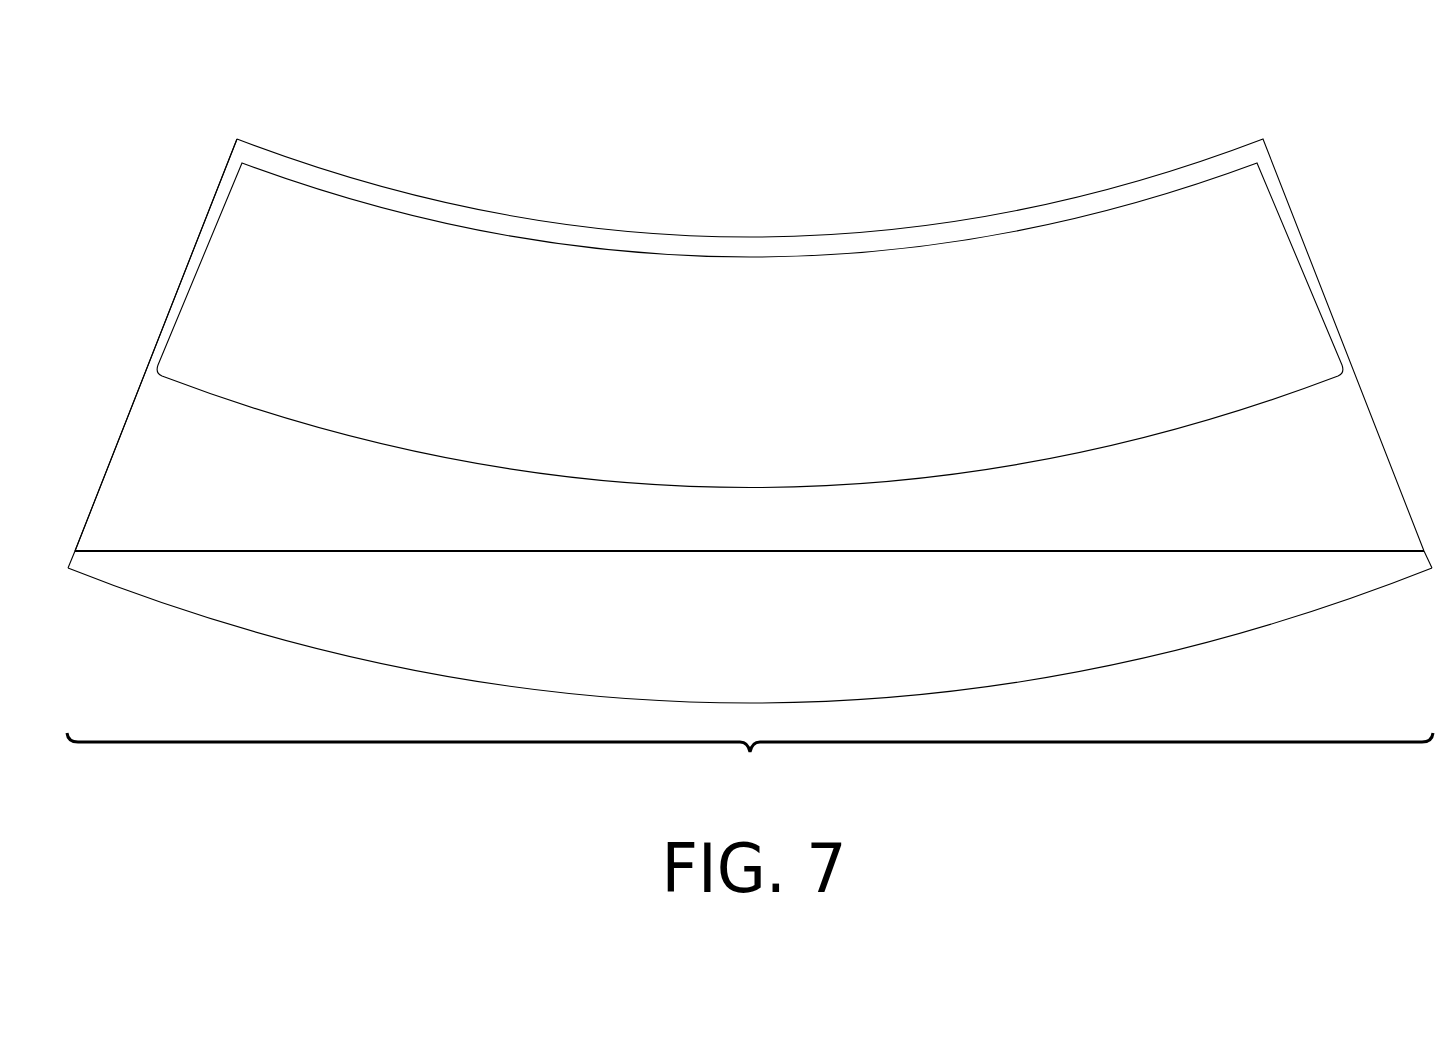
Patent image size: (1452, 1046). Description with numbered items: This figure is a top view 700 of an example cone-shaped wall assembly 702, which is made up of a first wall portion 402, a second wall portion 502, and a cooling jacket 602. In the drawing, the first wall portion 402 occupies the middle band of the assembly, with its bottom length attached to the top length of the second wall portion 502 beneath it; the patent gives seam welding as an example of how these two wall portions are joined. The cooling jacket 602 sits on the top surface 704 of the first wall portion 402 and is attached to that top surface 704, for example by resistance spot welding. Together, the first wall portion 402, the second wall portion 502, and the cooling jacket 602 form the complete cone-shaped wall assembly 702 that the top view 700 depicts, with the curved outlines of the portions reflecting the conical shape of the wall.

The cone-shaped wall assembly 702 is at (176, 64).
The top surface 704 is at (165, 425).
The cooling jacket 602 is at (733, 391).
The first wall portion 402 is at (733, 527).
The second wall portion 502 is at (733, 633).
The top view 700 is at (750, 756).